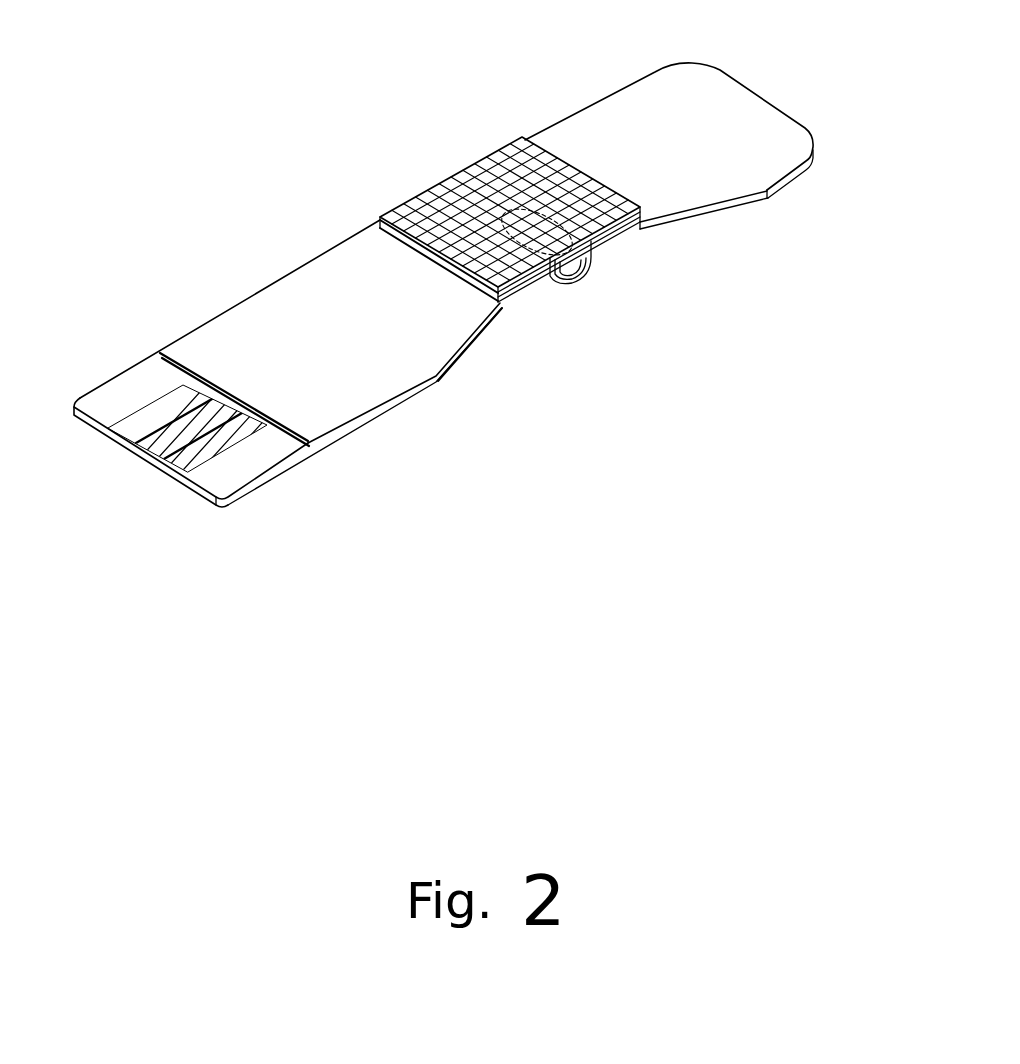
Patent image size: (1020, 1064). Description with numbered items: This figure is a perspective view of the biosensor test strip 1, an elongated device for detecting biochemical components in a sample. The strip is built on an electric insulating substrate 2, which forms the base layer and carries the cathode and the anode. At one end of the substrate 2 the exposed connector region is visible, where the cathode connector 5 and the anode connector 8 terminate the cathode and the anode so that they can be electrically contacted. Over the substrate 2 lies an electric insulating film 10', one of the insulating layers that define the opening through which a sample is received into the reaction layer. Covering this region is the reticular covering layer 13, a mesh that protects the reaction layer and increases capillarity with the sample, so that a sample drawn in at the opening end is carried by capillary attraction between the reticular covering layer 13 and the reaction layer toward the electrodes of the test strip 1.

The biosensor test strip 1 is at (410, 127).
The electric insulating substrate 2 is at (760, 133).
The cathode connector 5 is at (215, 442).
The anode connector 8 is at (143, 412).
The electric insulating film 10' is at (385, 331).
The reticular covering layer 13 is at (497, 142).